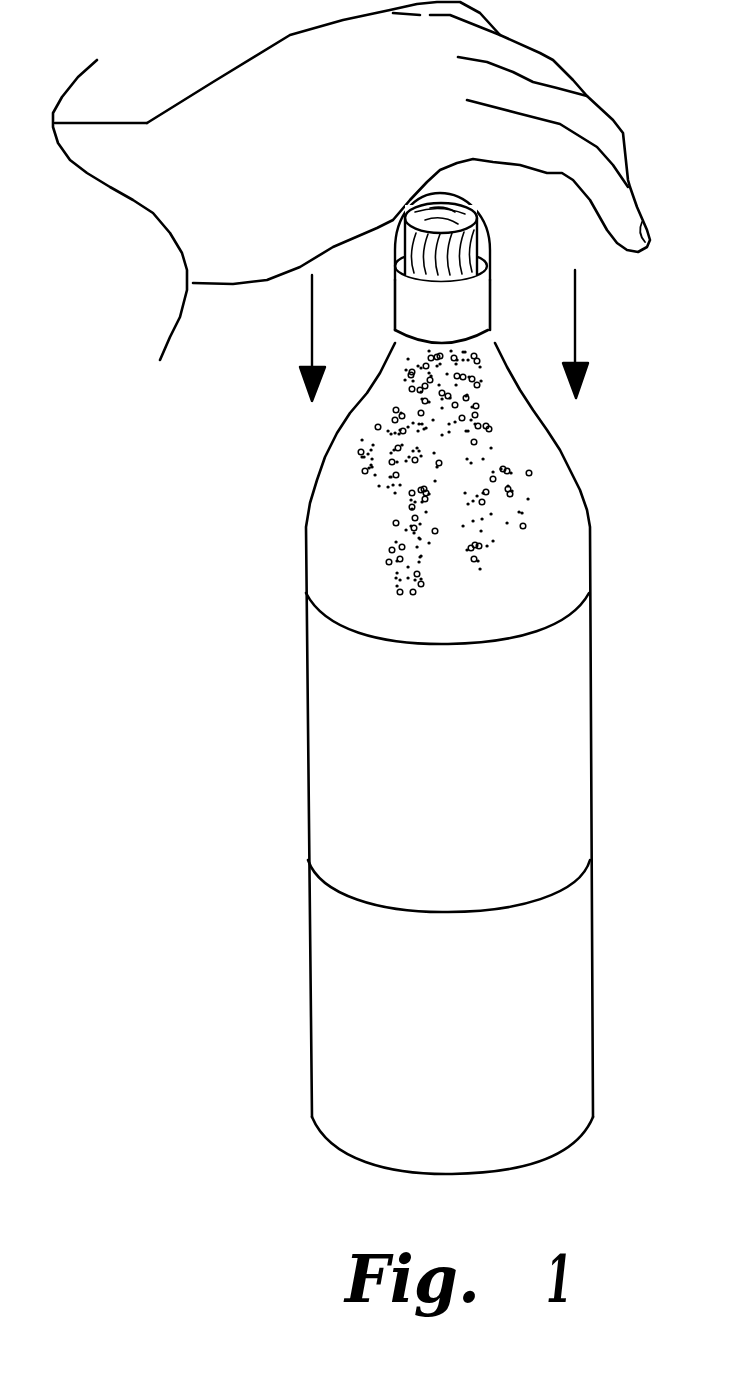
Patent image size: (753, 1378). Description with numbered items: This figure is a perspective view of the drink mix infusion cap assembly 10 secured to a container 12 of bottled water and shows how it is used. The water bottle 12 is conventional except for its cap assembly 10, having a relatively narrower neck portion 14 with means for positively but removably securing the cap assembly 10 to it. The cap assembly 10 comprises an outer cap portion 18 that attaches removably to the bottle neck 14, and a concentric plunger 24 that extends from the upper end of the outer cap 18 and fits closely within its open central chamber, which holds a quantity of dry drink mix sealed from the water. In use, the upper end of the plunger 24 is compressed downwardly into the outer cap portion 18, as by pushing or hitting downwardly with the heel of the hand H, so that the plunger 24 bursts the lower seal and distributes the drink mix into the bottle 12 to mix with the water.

The cap assembly 10 is at (372, 172).
The container 12 is at (308, 778).
The neck portion 14 is at (491, 341).
The outer cap portion 18 is at (395, 298).
The plunger 24 is at (492, 247).
The hand H is at (266, 284).